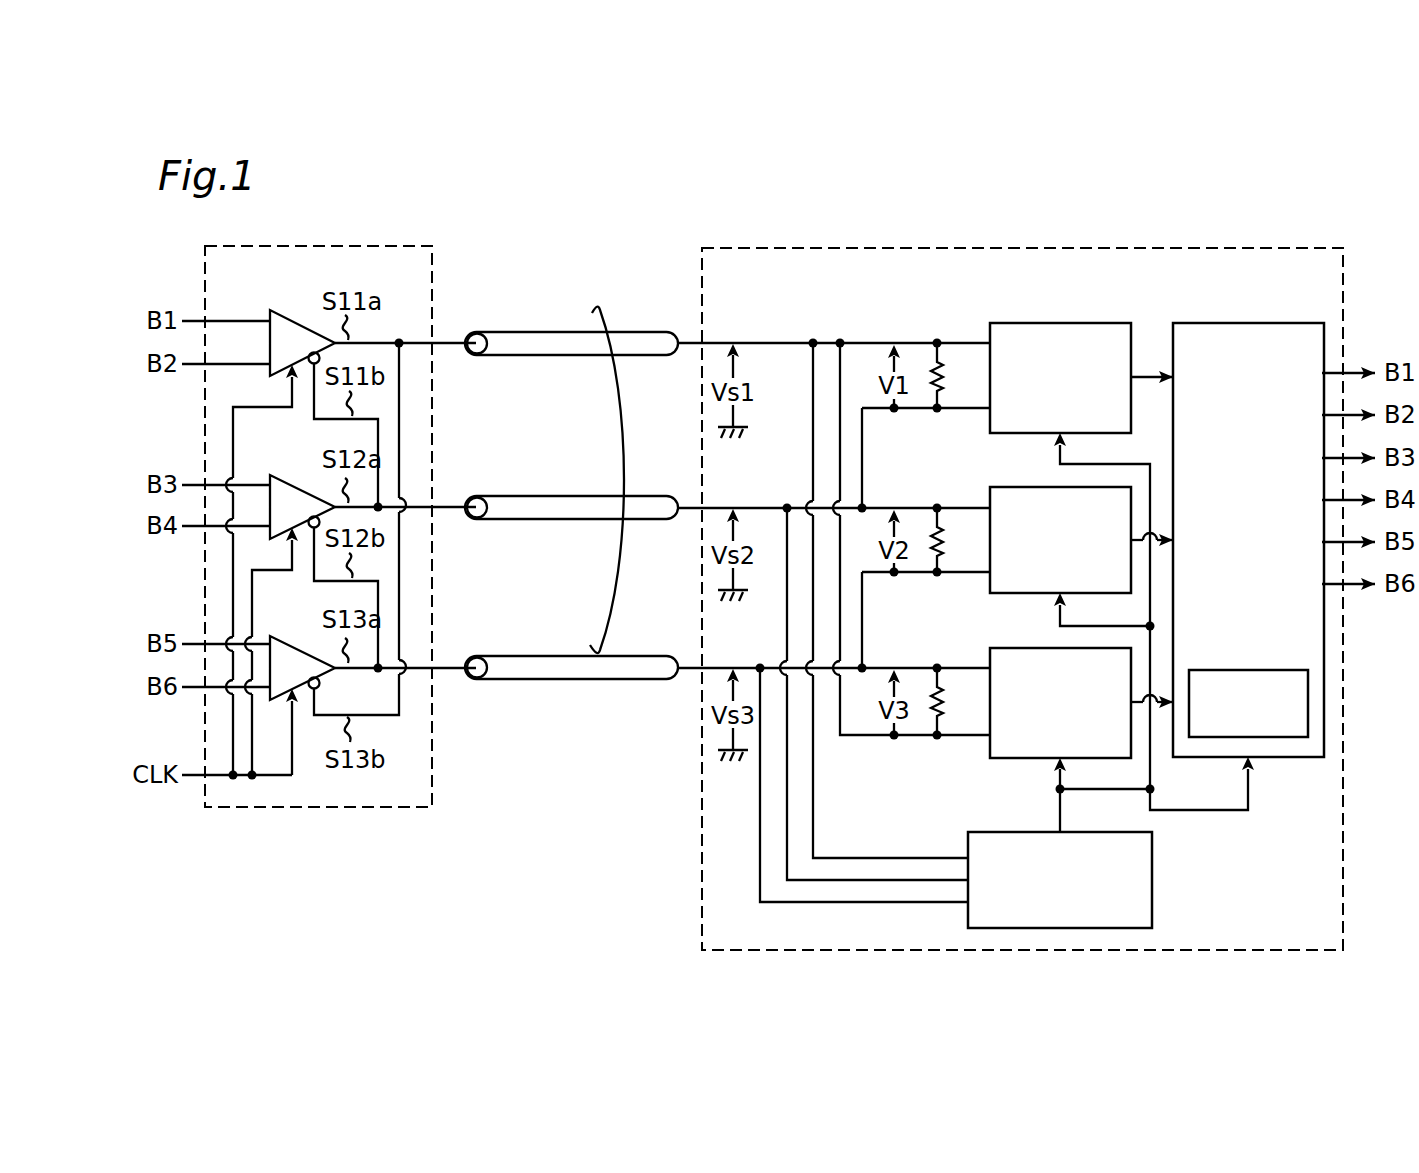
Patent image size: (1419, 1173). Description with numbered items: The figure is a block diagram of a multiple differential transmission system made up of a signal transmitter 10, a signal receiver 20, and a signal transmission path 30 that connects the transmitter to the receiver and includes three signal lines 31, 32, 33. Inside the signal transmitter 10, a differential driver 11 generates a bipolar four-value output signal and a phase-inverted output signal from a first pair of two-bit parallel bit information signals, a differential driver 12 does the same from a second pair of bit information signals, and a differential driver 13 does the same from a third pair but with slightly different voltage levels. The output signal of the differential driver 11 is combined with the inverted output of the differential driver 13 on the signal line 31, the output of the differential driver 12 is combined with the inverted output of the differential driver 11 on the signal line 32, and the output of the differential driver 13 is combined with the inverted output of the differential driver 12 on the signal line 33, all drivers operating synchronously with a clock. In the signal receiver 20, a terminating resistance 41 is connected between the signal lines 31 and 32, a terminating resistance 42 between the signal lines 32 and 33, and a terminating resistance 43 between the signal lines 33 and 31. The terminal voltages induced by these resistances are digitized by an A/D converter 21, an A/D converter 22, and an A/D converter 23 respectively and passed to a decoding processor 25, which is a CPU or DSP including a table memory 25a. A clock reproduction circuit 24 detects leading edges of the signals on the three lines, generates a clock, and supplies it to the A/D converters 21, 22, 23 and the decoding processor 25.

The signal transmitter 10 is at (318, 496).
The differential driver 11 is at (299, 319).
The differential driver 12 is at (299, 482).
The differential driver 13 is at (299, 645).
The signal receiver 20 is at (1022, 568).
The A/D converter 21 is at (1060, 352).
The A/D converter 22 is at (1060, 514).
The A/D converter 23 is at (1060, 677).
The clock reproduction circuit 24 is at (1060, 854).
The decoding processor 25 is at (1248, 514).
The table memory 25a is at (1248, 676).
The signal transmission path 30 is at (607, 452).
The signal line 31 is at (571, 319).
The signal line 32 is at (571, 482).
The signal line 33 is at (571, 643).
The terminating resistance 41 is at (943, 362).
The terminating resistance 42 is at (943, 527).
The terminating resistance 43 is at (943, 687).